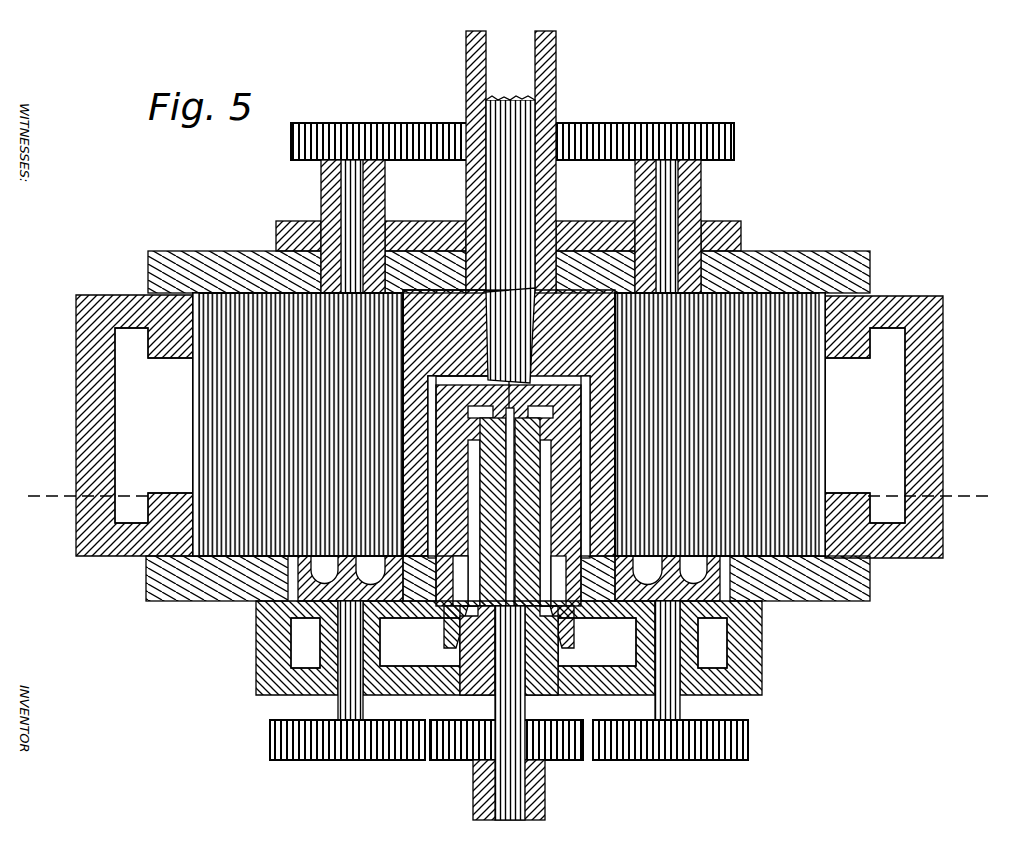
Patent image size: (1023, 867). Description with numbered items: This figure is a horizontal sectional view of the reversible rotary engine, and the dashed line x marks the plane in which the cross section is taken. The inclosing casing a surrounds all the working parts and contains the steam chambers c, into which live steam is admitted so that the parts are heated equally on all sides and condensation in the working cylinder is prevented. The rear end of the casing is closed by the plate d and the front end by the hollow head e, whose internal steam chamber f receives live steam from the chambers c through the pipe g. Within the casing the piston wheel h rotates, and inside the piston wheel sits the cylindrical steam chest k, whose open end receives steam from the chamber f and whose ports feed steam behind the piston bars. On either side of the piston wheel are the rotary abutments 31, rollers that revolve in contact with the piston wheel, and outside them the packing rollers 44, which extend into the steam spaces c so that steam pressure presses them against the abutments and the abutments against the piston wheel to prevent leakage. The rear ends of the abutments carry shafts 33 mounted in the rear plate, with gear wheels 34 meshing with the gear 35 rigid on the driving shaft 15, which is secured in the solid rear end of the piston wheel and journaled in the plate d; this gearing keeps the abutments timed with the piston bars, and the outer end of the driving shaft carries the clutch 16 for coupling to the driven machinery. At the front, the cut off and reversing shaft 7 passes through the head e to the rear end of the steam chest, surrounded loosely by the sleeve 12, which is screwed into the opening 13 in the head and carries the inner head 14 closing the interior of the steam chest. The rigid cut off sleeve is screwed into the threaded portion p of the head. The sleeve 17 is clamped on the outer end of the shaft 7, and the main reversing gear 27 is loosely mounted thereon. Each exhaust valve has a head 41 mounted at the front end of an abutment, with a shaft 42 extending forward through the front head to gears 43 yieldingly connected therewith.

The clutch 16 is at (458, 66).
The driving shaft 15 is at (478, 172).
The gear wheels 34 is at (319, 115).
The gear 35 is at (623, 129).
The shafts 33 is at (313, 188).
The rotary abutments 31 is at (509, 424).
The packing rollers 44 is at (190, 434).
The inner head 14 is at (496, 456).
The sleeve 12 is at (474, 530).
The shaft 7 is at (487, 700).
The opening 13 is at (536, 668).
The head 41 is at (509, 643).
The shaft 42 is at (330, 696).
The gears 43 is at (295, 752).
The main reversing gear 27 is at (440, 752).
The sleeve 17 is at (537, 780).
The casing a is at (68, 340).
The steam chambers c is at (510, 425).
The plate d is at (222, 243).
The head e is at (754, 630).
The steam chamber f is at (597, 642).
The pipe g is at (562, 423).
The piston wheel h is at (836, 356).
The steam chest k is at (535, 540).
The threaded portion p is at (420, 642).
The section line x is at (513, 488).